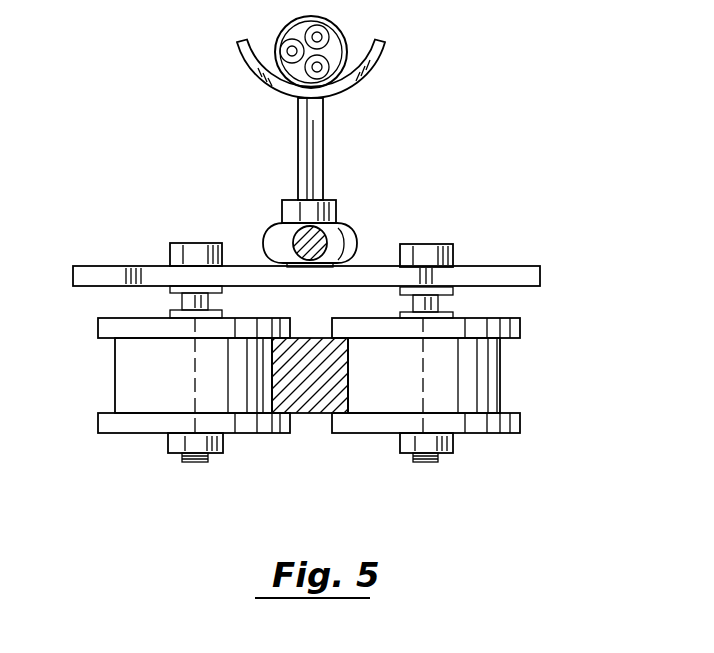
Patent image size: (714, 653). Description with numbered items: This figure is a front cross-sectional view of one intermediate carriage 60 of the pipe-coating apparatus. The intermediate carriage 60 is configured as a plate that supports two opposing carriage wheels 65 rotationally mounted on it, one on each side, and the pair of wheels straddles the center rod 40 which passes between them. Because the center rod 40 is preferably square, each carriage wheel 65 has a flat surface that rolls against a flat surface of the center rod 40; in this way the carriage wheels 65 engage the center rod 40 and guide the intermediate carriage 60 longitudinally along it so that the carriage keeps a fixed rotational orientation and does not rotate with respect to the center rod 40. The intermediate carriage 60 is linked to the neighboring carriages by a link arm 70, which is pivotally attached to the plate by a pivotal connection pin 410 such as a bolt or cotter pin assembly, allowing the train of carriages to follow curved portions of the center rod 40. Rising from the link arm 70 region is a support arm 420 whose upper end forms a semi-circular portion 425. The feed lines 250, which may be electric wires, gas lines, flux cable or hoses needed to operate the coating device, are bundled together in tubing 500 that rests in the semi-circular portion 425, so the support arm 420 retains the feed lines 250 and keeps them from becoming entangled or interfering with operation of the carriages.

The center rod 40 is at (307, 392).
The intermediate carriage 60 is at (540, 277).
The carriage wheel 65 is at (488, 372).
The link arm 70 is at (278, 237).
The feed lines 250 is at (344, 56).
The pivotal connection pin 410 is at (432, 250).
The support arm 420 is at (313, 165).
The semi-circular portion 425 is at (362, 88).
The tubing 500 is at (284, 30).